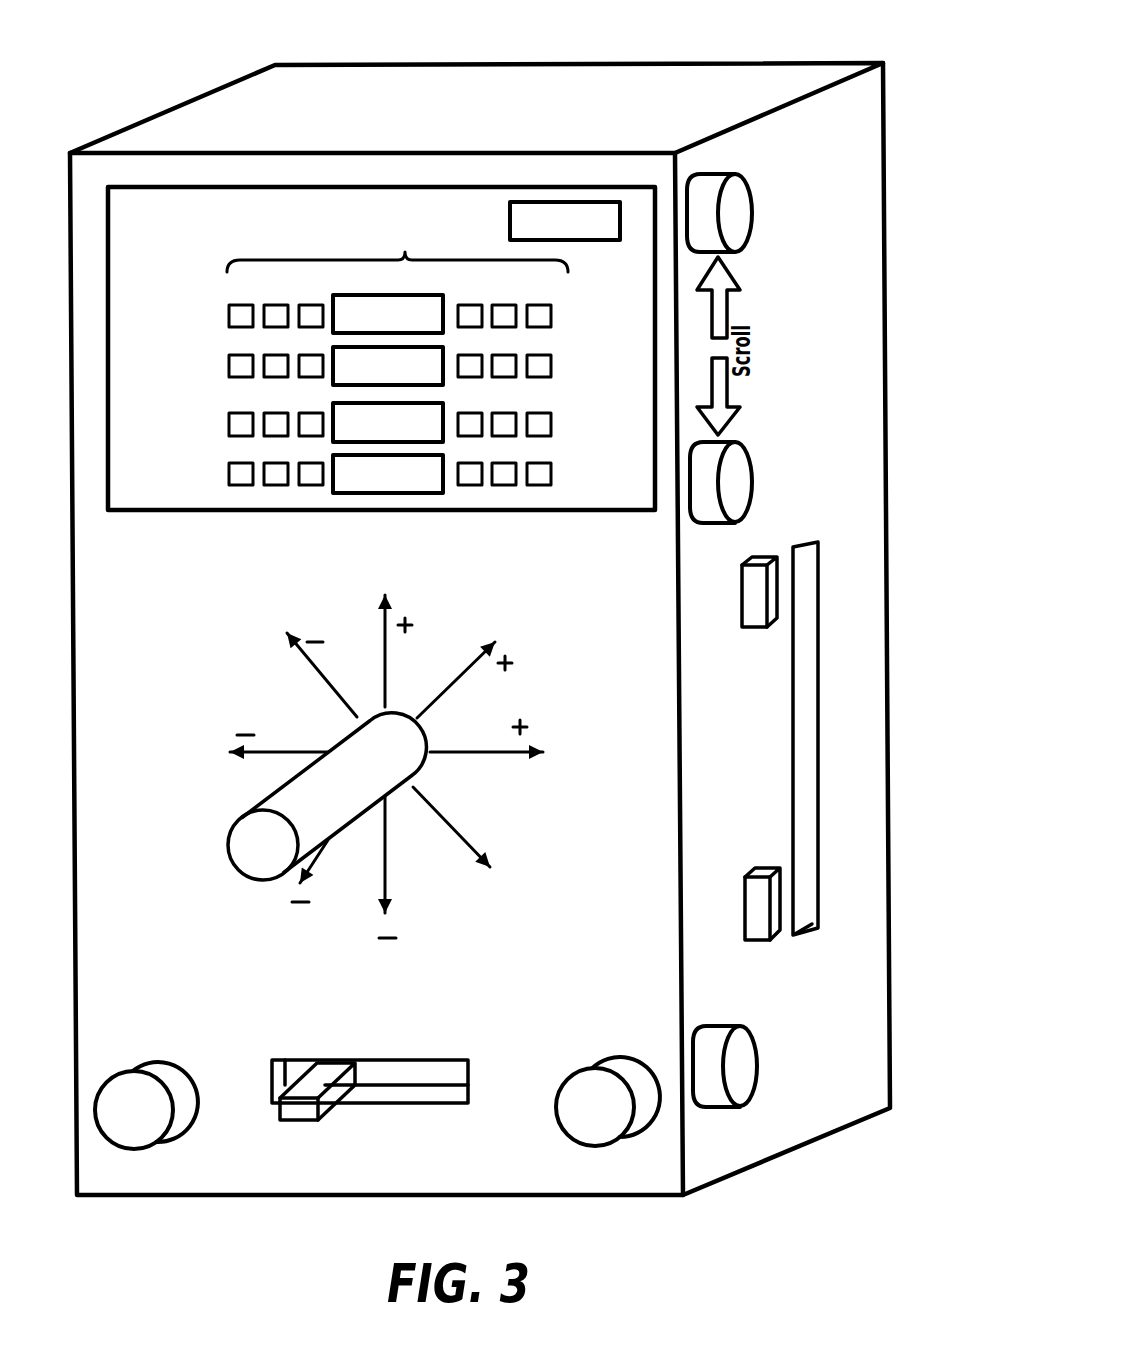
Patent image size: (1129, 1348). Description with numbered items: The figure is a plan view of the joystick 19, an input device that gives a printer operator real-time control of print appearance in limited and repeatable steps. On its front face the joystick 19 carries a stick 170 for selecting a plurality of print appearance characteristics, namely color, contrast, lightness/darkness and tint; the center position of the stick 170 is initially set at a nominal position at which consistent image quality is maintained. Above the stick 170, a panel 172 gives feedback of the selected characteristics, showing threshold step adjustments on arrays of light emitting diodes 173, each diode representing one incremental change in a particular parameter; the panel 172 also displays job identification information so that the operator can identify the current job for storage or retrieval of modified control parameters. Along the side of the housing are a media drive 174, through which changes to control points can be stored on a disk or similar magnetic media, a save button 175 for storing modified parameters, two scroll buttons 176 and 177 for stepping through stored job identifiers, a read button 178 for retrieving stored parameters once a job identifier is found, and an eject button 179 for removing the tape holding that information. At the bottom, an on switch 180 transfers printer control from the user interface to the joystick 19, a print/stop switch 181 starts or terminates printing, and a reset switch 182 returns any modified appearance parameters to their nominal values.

The joystick 19 is at (682, 77).
The stick 170 is at (238, 813).
The panel 172 is at (381, 392).
The arrays of light emitting diodes 173 is at (397, 349).
The media drive 174 is at (807, 703).
The save button 175 is at (757, 1060).
The scroll button 176 is at (738, 490).
The scroll button 177 is at (740, 223).
The read button 178 is at (762, 883).
The eject button 179 is at (758, 623).
The on switch 180 is at (593, 1067).
The print/stop switch 181 is at (300, 1113).
The reset switch 182 is at (187, 1112).